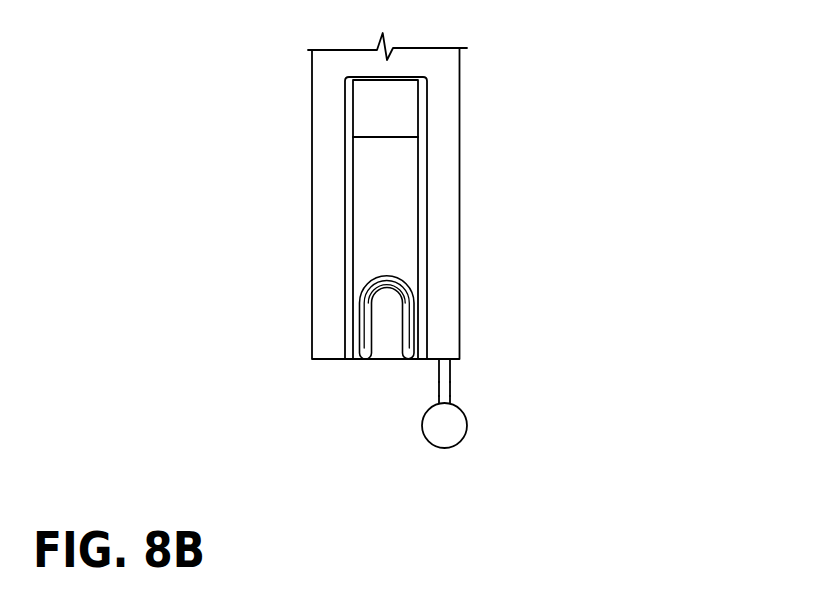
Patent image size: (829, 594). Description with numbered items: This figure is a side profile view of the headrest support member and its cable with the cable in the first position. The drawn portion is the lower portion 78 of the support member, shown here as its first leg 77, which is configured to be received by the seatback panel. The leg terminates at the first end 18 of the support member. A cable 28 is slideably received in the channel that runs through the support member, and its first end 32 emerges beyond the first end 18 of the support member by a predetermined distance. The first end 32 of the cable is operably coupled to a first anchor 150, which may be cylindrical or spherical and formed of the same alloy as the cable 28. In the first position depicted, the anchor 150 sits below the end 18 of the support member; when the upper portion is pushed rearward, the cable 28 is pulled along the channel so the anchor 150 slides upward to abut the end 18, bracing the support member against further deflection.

The lower portion 78 is at (438, 119).
The first leg 77 is at (446, 277).
The first end 18 is at (451, 362).
The cable 28 is at (450, 383).
The first end 32 is at (440, 403).
The first anchor 150 is at (450, 426).